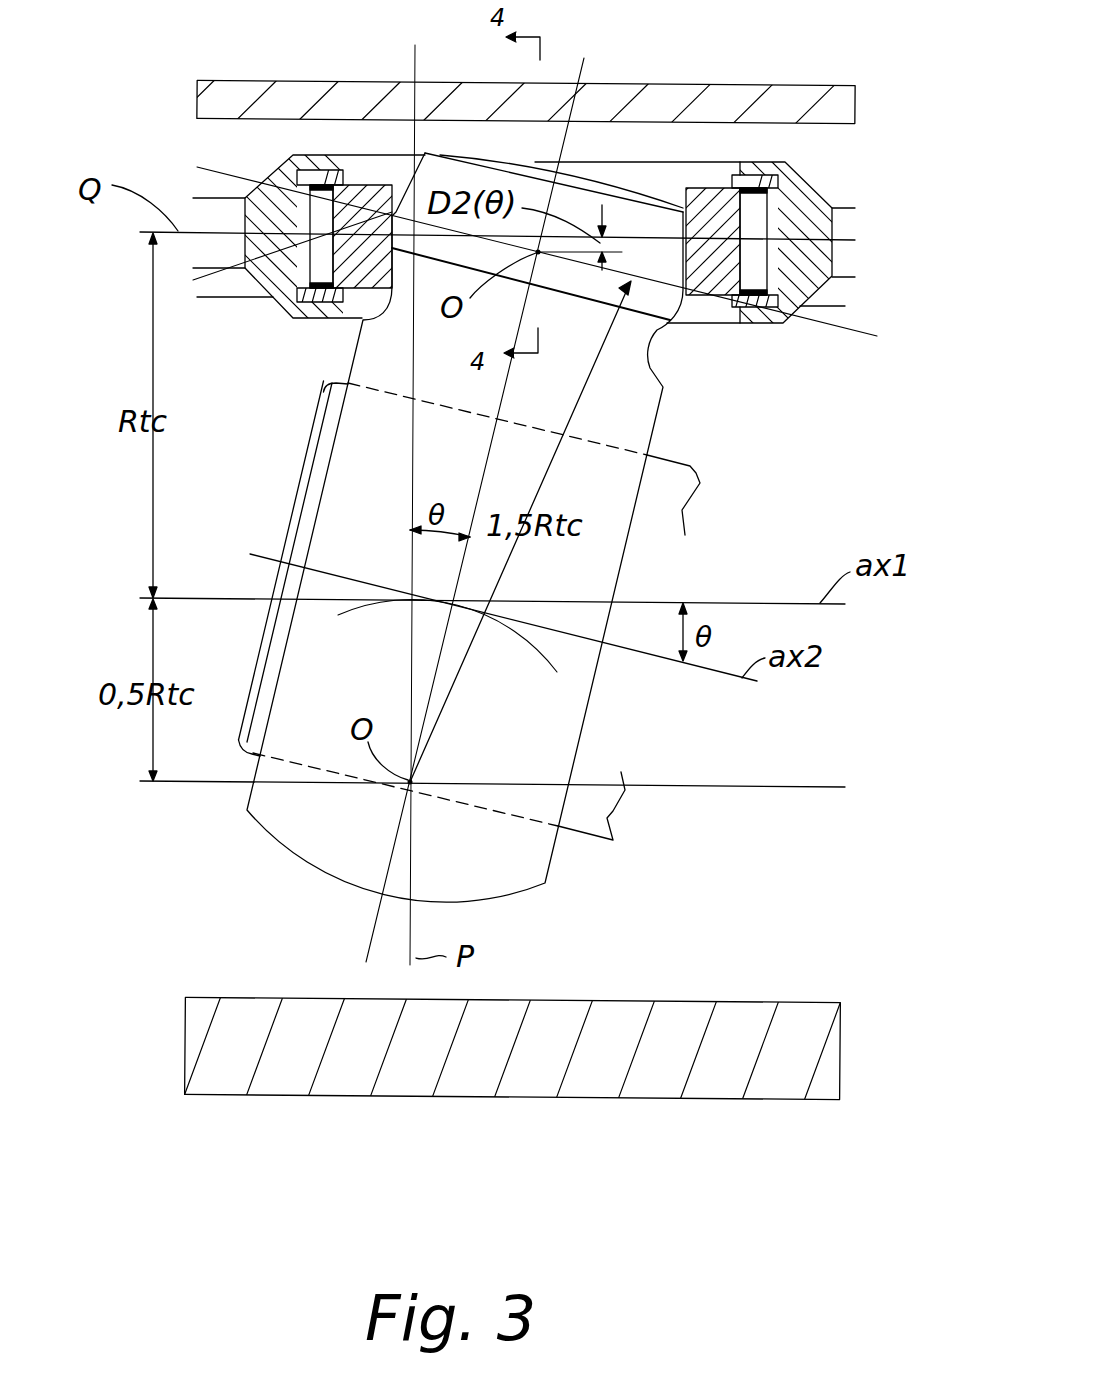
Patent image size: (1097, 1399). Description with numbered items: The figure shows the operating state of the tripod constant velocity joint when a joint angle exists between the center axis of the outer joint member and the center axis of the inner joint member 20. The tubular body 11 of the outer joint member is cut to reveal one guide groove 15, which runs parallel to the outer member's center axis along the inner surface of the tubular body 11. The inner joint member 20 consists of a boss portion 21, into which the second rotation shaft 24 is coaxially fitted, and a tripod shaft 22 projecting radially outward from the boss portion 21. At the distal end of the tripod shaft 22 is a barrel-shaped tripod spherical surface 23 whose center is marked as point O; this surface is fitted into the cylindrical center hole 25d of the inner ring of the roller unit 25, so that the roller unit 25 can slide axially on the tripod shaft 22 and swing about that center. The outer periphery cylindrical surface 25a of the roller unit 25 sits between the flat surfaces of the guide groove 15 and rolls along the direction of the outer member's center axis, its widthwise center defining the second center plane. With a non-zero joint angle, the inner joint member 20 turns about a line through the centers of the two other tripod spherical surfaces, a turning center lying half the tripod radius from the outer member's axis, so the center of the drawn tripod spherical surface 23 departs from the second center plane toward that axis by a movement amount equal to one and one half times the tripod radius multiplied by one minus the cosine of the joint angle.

The tubular body 11 is at (790, 1014).
The guide groove 15 is at (291, 106).
The inner joint member 20 is at (429, 458).
The boss portion 21 is at (570, 724).
The tripod shaft 22 is at (582, 170).
The tripod spherical surface 23 is at (400, 205).
The second rotation shaft 24 is at (589, 825).
The roller unit 25 is at (564, 187).
The outer periphery cylindrical surface 25a is at (858, 266).
The cylindrical center hole 25d is at (683, 200).